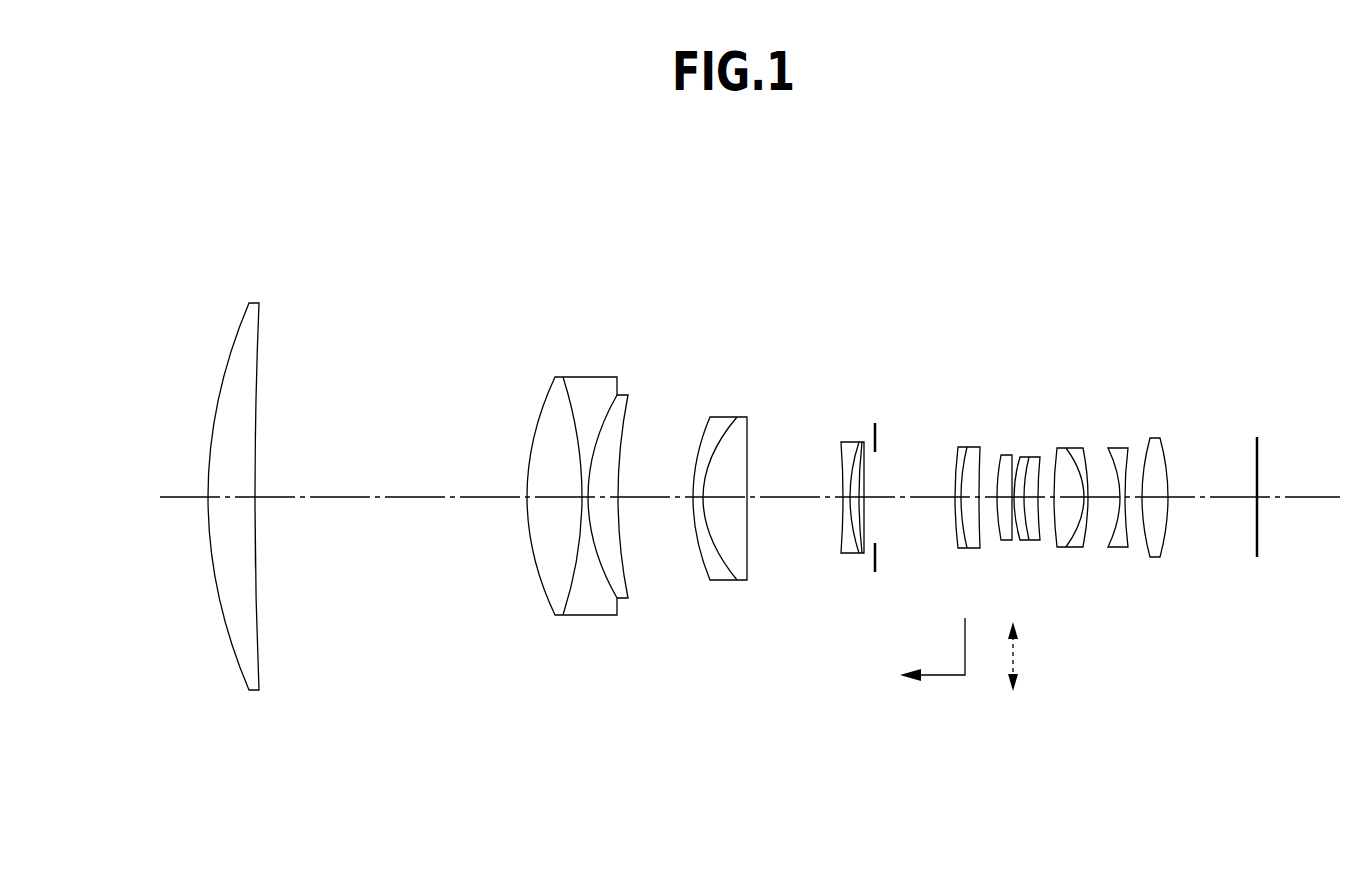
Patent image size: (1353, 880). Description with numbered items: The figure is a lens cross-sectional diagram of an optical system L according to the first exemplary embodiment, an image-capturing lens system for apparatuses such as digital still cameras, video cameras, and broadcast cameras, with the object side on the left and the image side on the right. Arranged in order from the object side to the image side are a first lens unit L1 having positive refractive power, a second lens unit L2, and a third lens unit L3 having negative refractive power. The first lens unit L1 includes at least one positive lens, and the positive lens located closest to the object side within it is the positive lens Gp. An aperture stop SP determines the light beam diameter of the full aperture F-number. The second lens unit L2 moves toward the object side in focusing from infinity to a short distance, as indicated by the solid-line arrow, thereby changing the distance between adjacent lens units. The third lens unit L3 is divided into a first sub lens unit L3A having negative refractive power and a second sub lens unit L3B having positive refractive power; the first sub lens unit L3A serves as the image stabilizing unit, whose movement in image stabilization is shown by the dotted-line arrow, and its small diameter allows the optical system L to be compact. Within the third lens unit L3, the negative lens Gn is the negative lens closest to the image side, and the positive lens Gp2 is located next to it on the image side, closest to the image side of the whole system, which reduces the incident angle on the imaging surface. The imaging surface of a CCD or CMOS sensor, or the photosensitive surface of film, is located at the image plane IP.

The optical system L is at (1243, 195).
The first lens unit L1 is at (907, 273).
The second lens unit L2 is at (986, 273).
The third lens unit L3 is at (1183, 273).
The first sub lens unit L3A is at (1047, 363).
The second sub lens unit L3B is at (1173, 363).
The positive lens Gp is at (243, 660).
The aperture stop SP is at (873, 568).
The negative lens Gn is at (1115, 547).
The positive lens Gp2 is at (1157, 552).
The image plane IP is at (1259, 548).